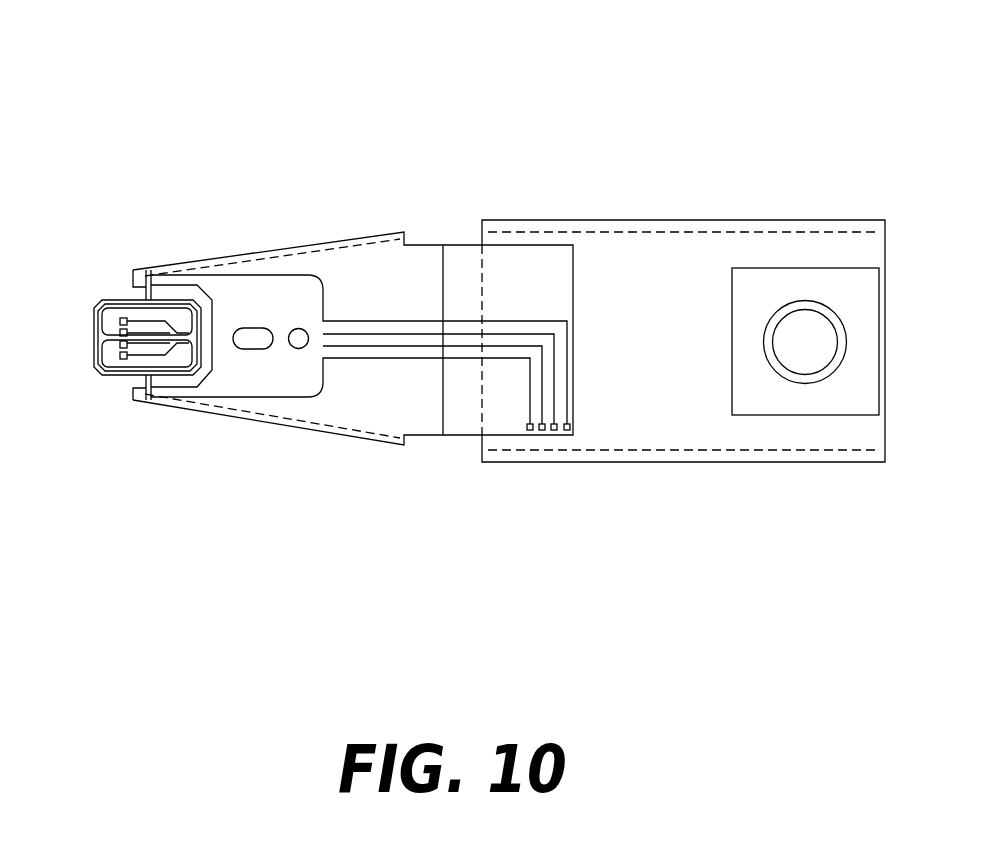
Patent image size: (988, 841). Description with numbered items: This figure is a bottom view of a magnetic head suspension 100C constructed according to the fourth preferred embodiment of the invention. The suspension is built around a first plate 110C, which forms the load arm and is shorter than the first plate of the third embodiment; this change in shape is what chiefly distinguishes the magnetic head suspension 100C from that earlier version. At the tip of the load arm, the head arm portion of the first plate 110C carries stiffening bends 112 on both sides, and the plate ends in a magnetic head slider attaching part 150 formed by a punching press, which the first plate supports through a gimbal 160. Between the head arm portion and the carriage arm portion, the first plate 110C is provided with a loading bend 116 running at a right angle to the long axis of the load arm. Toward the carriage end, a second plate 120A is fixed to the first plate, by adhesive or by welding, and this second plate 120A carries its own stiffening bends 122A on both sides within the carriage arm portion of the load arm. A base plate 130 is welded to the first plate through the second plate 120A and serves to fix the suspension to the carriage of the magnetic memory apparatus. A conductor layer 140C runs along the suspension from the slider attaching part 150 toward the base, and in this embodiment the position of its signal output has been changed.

The magnetic head suspension 100C is at (340, 166).
The first plate 110C is at (337, 398).
The stiffening bends 112 is at (143, 403).
The loading bend 116 is at (443, 400).
The second plate 120A is at (620, 262).
The stiffening bends 122A is at (720, 223).
The base plate 130 is at (853, 303).
The conductor layer 140C is at (238, 398).
The magnetic head slider attaching part 150 is at (140, 333).
The gimbal 160 is at (68, 397).